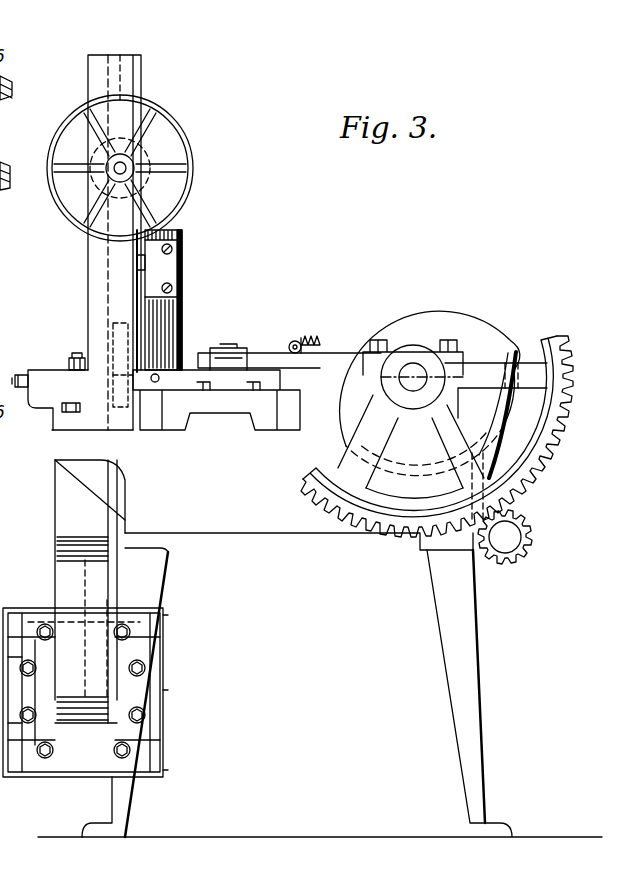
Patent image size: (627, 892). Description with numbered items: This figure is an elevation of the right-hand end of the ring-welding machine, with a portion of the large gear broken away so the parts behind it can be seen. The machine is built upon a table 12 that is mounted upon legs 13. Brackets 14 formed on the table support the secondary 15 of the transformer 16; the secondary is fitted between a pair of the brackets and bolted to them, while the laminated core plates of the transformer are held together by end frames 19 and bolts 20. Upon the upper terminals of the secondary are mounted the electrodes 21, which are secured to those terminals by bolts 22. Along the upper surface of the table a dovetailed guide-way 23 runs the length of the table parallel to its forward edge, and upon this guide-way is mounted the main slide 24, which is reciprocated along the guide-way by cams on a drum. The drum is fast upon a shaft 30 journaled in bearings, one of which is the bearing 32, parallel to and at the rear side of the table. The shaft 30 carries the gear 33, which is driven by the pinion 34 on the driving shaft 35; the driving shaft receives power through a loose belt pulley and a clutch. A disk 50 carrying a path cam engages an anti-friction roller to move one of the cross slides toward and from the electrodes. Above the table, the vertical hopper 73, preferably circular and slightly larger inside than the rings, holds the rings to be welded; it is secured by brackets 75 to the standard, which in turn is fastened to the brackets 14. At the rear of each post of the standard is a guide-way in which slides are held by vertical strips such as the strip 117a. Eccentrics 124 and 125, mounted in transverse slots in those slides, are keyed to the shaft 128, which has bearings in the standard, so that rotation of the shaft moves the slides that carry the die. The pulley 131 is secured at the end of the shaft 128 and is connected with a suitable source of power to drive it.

The table 12 is at (240, 522).
The legs 13 is at (458, 677).
The brackets 14 is at (70, 440).
The secondary 15 is at (62, 503).
The transformer 16 is at (140, 717).
The end frames 19 is at (148, 763).
The bolts 20 is at (140, 715).
The electrodes 21 is at (60, 373).
The bolts 22 is at (75, 353).
The dovetailed guide-way 23 is at (255, 417).
The main slide 24 is at (175, 413).
The shaft 30 is at (413, 377).
The bearing 32 is at (375, 364).
The gear 33 is at (556, 410).
The pinion 34 is at (527, 553).
The driving shaft 35 is at (505, 543).
The disk 50 is at (369, 277).
The vertical hopper 73 is at (175, 231).
The brackets 75 is at (168, 268).
The vertical strip 117a is at (138, 315).
The eccentric 124 is at (148, 150).
The eccentric 125 is at (140, 183).
The shaft 128 is at (120, 168).
The pulley 131 is at (178, 128).